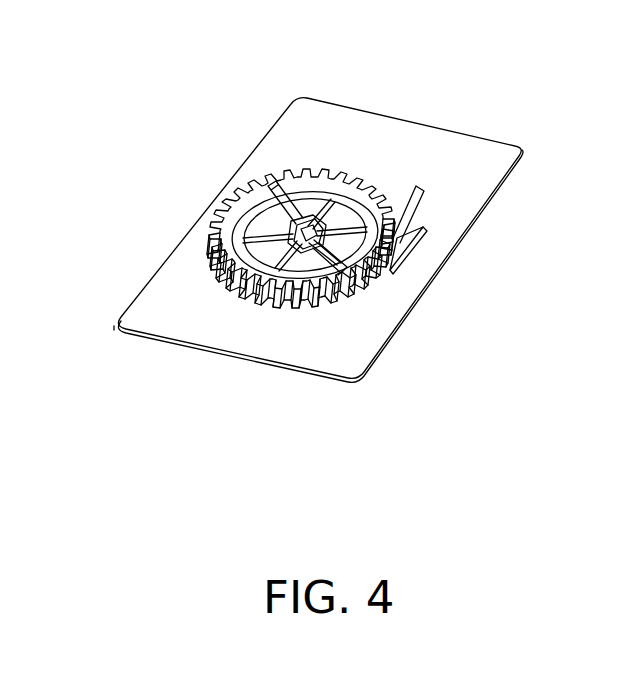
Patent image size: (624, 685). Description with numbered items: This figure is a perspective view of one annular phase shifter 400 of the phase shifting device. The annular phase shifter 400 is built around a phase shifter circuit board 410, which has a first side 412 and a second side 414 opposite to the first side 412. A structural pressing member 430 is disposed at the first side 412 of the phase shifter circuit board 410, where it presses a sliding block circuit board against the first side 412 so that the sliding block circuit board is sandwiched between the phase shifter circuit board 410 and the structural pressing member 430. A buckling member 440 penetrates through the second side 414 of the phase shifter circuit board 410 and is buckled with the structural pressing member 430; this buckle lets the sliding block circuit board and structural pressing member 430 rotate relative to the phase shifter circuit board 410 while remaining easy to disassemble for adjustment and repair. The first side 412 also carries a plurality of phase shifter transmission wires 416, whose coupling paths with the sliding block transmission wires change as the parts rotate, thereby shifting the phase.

The annular phase shifter 400 is at (77, 108).
The phase shifter circuit board 410 is at (527, 305).
The first side 412 is at (407, 292).
The second side 414 is at (377, 357).
The phase shifter transmission wires 416 is at (420, 197).
The structural pressing member 430 is at (343, 177).
The buckling member 440 is at (300, 195).